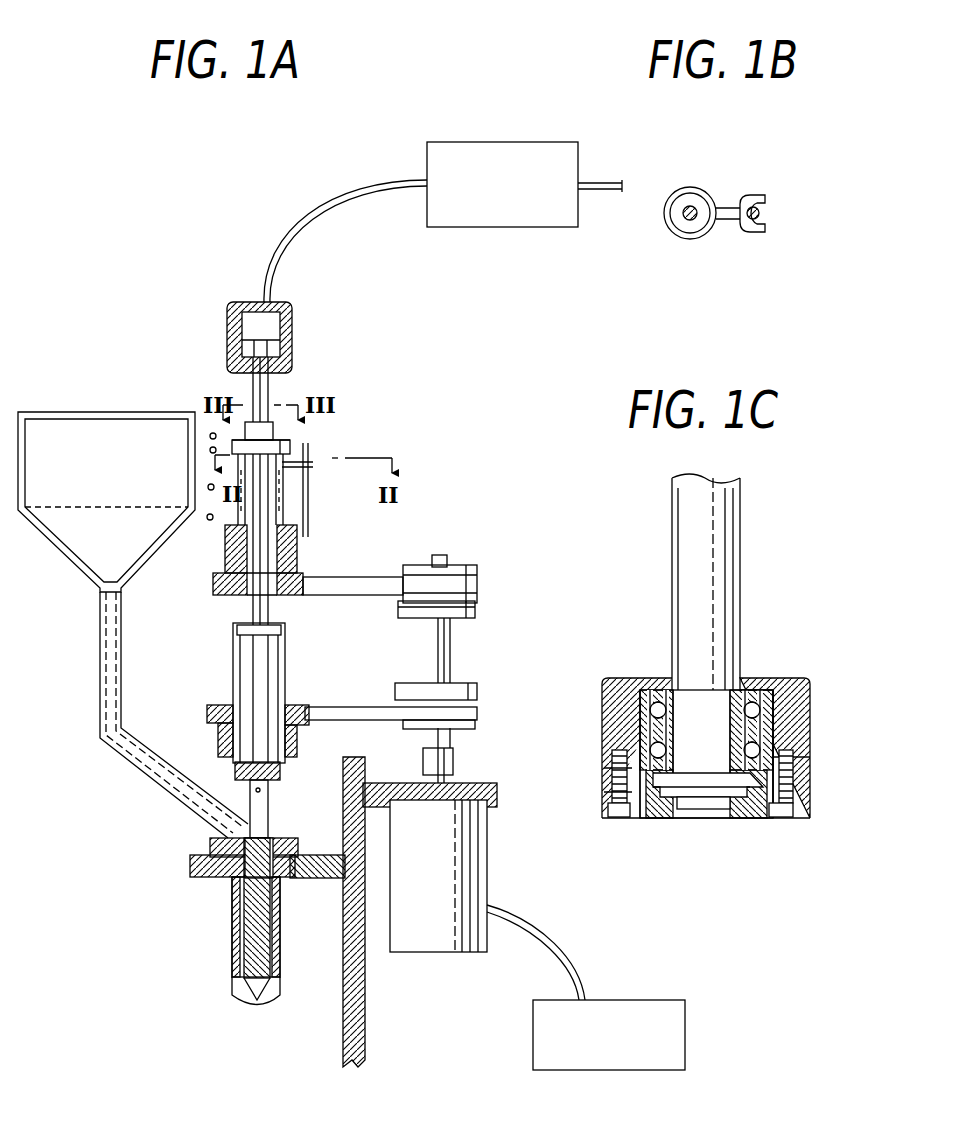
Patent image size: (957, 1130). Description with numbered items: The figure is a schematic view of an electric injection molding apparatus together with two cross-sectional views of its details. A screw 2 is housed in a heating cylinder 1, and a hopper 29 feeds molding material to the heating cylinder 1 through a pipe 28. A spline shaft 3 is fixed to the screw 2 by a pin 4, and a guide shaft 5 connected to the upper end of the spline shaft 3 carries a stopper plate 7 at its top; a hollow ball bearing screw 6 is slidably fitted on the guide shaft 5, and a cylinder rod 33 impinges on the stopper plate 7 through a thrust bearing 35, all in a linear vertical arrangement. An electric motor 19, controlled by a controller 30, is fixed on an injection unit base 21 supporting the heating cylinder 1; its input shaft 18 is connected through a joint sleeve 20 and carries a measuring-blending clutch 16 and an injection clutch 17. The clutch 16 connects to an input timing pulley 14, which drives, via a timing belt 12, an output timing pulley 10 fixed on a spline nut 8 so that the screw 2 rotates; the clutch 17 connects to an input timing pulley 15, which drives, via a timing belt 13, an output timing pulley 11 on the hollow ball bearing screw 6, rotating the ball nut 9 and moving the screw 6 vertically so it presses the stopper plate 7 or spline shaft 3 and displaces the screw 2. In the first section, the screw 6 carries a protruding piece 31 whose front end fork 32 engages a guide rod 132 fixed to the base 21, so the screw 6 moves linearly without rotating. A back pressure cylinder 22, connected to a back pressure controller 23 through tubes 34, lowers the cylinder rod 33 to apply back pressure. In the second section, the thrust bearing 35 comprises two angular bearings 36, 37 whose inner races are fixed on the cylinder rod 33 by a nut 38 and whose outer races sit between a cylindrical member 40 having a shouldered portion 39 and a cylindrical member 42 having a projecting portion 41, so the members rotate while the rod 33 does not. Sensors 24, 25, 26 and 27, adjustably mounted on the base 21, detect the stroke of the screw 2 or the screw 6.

In FIG. 1A, the heating cylinder 1 is at (232, 913).
In FIG. 1A, the screw 2 is at (192, 866).
In FIG. 1A, the spline shaft 3 is at (270, 660).
In FIG. 1A, the pin 4 is at (262, 792).
In FIG. 1A, the guide shaft 5 is at (280, 600).
In FIG. 1B, the guide shaft 5 is at (688, 226).
In FIG. 1A, the hollow ball bearing screw 6 is at (236, 520).
In FIG. 1B, the hollow ball bearing screw 6 is at (680, 190).
In FIG. 1A, the stopper plate 7 is at (275, 418).
In FIG. 1A, the spline nut 8 is at (218, 746).
In FIG. 1A, the ball nut 9 is at (230, 565).
In FIG. 1A, the output timing pulley 10 is at (215, 705).
In FIG. 1A, the output timing pulley 11 is at (295, 578).
In FIG. 1A, the timing belt 12 is at (330, 706).
In FIG. 1A, the timing belt 13 is at (362, 580).
In FIG. 1A, the input timing pulley 14 is at (462, 730).
In FIG. 1A, the input timing pulley 15 is at (462, 568).
In FIG. 1A, the measuring-blending clutch 16 is at (415, 690).
In FIG. 1A, the injection clutch 17 is at (400, 608).
In FIG. 1A, the input shaft 18 is at (447, 644).
In FIG. 1A, the electric motor 19 is at (490, 862).
In FIG. 1A, the joint sleeve 20 is at (425, 760).
In FIG. 1A, the injection unit base 21 is at (357, 1002).
In FIG. 1A, the back pressure cylinder 22 is at (293, 310).
In FIG. 1A, the back pressure controller 23 is at (545, 142).
In FIG. 1A, the suction completion sensor 24 is at (208, 432).
In FIG. 1A, the measuring-blending sensor 25 is at (208, 450).
In FIG. 1A, the screw over-run sensor 26 is at (205, 518).
In FIG. 1A, the ball bearing screw stand-by position sensor 27 is at (206, 487).
In FIG. 1A, the pipe 28 is at (146, 776).
In FIG. 1A, the hopper 29 is at (50, 435).
In FIG. 1A, the controller 30 is at (662, 1000).
In FIG. 1A, the protruding piece 31 is at (305, 447).
In FIG. 1B, the protruding piece 31 is at (733, 208).
In FIG. 1B, the fork 32 is at (764, 212).
In FIG. 1A, the cylinder rod 33 is at (272, 385).
In FIG. 1C, the cylinder rod 33 is at (718, 550).
In FIG. 1A, the tubes 34 is at (338, 200).
In FIG. 1A, the thrust bearing 35 is at (247, 430).
In FIG. 1C, the thrust bearing 35 is at (622, 676).
In FIG. 1C, the angular bearing 36 is at (812, 697).
In FIG. 1C, the angular bearing 37 is at (812, 757).
In FIG. 1C, the nut 38 is at (736, 810).
In FIG. 1C, the shouldered portion 39 is at (766, 678).
In FIG. 1C, the cylindrical member 40 is at (800, 678).
In FIG. 1C, the projecting portion 41 is at (608, 770).
In FIG. 1C, the cylindrical member 42 is at (610, 793).
In FIG. 1A, the guide rod 132 is at (309, 490).